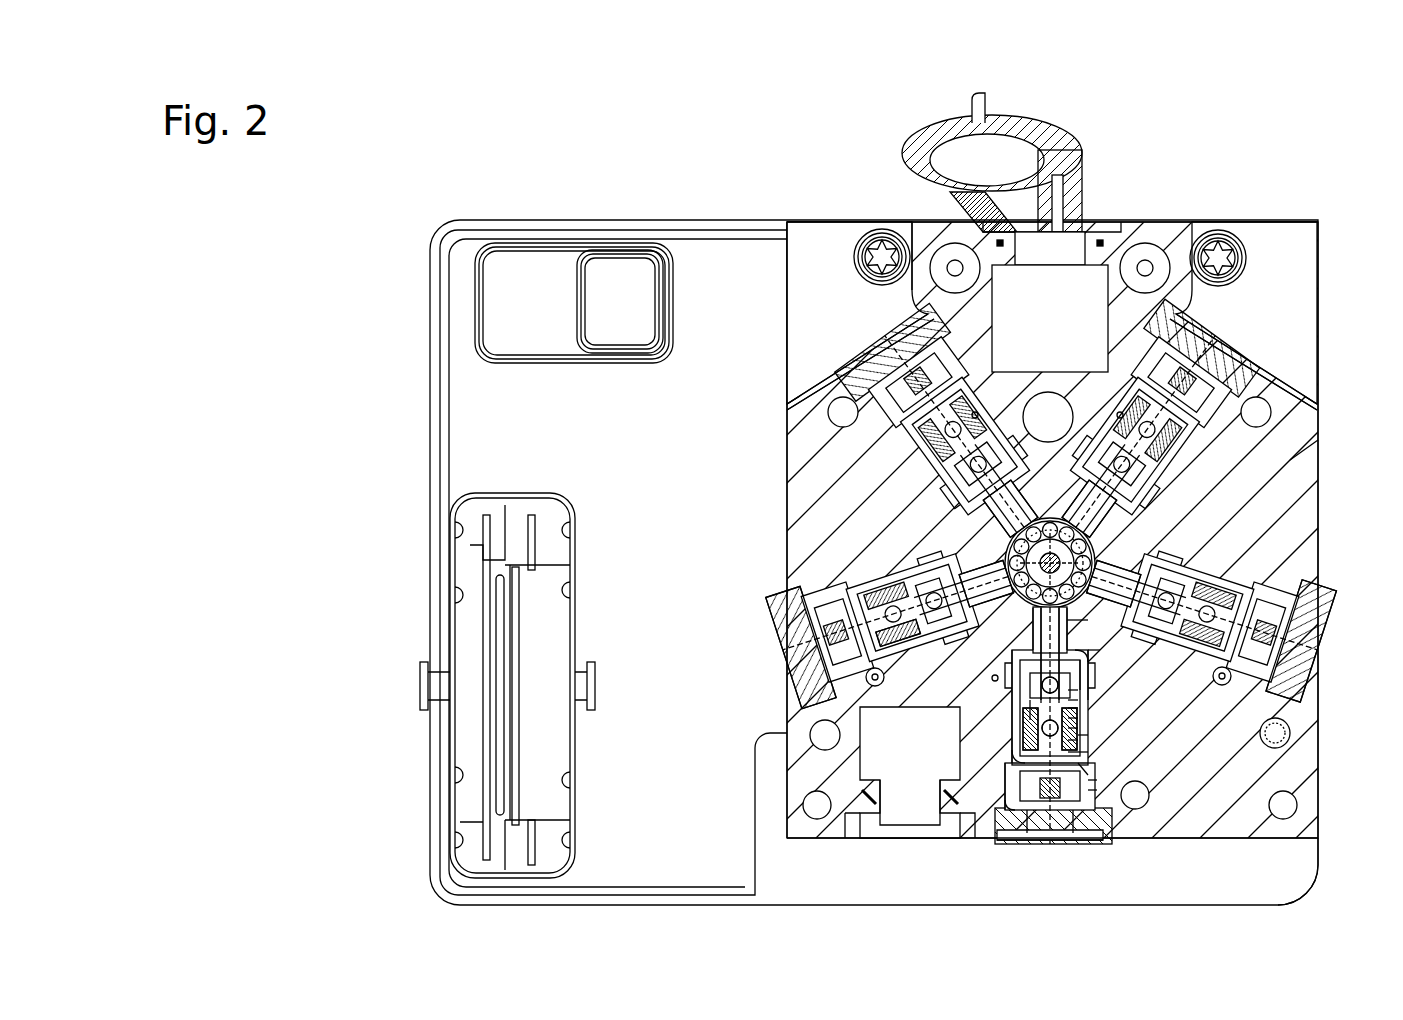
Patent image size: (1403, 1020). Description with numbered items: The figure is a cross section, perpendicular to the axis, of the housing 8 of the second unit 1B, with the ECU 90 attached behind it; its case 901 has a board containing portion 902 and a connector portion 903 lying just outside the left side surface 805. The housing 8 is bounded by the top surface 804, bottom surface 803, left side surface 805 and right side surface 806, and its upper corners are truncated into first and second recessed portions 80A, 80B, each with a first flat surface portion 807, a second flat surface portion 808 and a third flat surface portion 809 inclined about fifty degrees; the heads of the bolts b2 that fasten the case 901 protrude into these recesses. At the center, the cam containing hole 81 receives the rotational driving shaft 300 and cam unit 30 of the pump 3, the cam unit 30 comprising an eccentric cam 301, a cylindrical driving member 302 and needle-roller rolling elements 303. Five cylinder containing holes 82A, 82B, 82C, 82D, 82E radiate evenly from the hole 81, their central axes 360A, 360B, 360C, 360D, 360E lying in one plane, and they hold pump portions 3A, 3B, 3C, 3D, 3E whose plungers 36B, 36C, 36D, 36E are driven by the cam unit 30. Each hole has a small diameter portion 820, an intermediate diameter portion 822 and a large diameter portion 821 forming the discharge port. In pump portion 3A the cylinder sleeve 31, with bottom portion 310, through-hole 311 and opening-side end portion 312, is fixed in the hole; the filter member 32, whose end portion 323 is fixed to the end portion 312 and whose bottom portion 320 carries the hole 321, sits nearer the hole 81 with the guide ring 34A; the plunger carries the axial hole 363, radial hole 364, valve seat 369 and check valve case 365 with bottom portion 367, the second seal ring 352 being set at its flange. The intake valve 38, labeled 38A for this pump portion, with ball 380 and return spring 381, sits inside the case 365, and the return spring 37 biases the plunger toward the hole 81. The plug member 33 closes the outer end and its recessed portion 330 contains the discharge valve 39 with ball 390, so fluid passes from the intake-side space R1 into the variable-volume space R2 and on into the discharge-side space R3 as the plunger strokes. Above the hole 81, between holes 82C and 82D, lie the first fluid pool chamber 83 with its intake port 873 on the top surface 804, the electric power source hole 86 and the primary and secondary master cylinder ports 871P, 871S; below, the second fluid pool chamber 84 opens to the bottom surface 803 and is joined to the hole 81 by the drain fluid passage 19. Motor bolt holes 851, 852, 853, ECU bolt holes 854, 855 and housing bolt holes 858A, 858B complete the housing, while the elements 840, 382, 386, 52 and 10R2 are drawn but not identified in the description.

The ECU 90 is at (655, 220).
The connector portion 903 is at (580, 860).
The housing 8 is at (1300, 490).
The second unit 1B is at (1340, 222).
The first recessed portion 80A is at (840, 300).
The second recessed portion 80B is at (1265, 270).
The first flat surface portion 807 is at (805, 232).
The second flat surface portion 808 is at (873, 233).
The bolts b2 is at (882, 285).
The intake port 873 is at (953, 255).
The primary port 871P is at (1148, 258).
The secondary port 871S is at (905, 232).
The ring 10R2 is at (1000, 135).
The first fluid pool chamber 83 is at (1075, 230).
The top surface 804 is at (1110, 245).
The electric power source hole 86 is at (1050, 318).
The cam containing hole 81 is at (1045, 442).
The central axis of plunger 36C 360C is at (870, 340).
The central axis of plunger 36D 360D is at (1230, 340).
The third flat surface portion 809 is at (795, 398).
The bolt hole 852 is at (830, 415).
The bolt hole 853 is at (1270, 415).
The left side surface 805 is at (785, 495).
The pump 3 is at (1280, 575).
The cam unit 30 is at (1010, 545).
The rotational driving shaft 300 is at (1012, 555).
The driving member 302 is at (1090, 538).
The cam 301 is at (1092, 548).
The rolling elements 303 is at (1095, 558).
The pump portion 3A is at (1110, 810).
The pump portion 3B is at (828, 585).
The pump portion 3C is at (885, 440).
The pump portion 3D is at (1190, 445).
The pump portion 3E is at (1220, 565).
The plunger 36B is at (960, 560).
The plunger 36C is at (965, 490).
The plunger 36D is at (1140, 488).
The plunger 36E is at (1150, 560).
The central axis of plunger 36A 360A is at (1085, 845).
The central axis of plunger 36B 360B is at (780, 640).
The central axis of plunger 36E 360E is at (1315, 655).
The drain fluid passage 19 is at (975, 655).
The second fluid pool chamber 84 is at (905, 780).
The bracket 840 is at (950, 845).
The bolt hole 855 is at (825, 750).
The bolt hole 858A is at (817, 820).
The right side surface 806 is at (1290, 733).
The bolt hole 858B is at (1280, 745).
The bolt hole 851 is at (1145, 795).
The bolt hole 854 is at (1297, 805).
The control unit housing 901 is at (1320, 860).
The board containing portion 902 is at (1305, 895).
The bottom surface 803 is at (1230, 850).
The cylinder containing hole 82A is at (990, 680).
The cylinder containing hole 82B is at (895, 668).
The cylinder containing hole 82C is at (980, 410).
The cylinder containing hole 82D is at (1115, 410).
The cylinder containing hole 82E is at (1215, 676).
The small diameter portion 820 is at (1020, 617).
The return spring 381 is at (1020, 628).
The hole 321 is at (1022, 640).
The intake valve 38A is at (1025, 660).
The end portion of filter member 323 is at (1025, 688).
The intermediate diameter portion 822 is at (1025, 698).
The seal 382 is at (1025, 708).
The ring 386 is at (1022, 718).
The cylinder sleeve 31 is at (1022, 733).
The ball 52 is at (1022, 743).
The space R2 is at (1022, 758).
The large diameter portion 821 is at (1022, 770).
The plug member 33 is at (1022, 786).
The discharge-side space R3 is at (1028, 795).
The guide ring 34A is at (1072, 625).
The bottom portion of filter member 320 is at (1075, 637).
The filter member 32 is at (1078, 648).
The intake-side space R1 is at (1078, 660).
The end portion of cylinder sleeve 312 is at (1100, 650).
The radial hole 364 is at (1078, 680).
The axial hole 363 is at (1085, 688).
The second seal ring 352 is at (1085, 703).
The valve seat 369 is at (1085, 715).
The return spring 37 is at (1085, 726).
The ball 380 is at (1085, 740).
The intake valve 38 is at (1142, 745).
The check valve case 365 is at (1085, 762).
The bottom portion of check valve case 367 is at (1090, 766).
The ball 390 is at (1125, 775).
The discharge valve 39 is at (1166, 780).
The hole 311 is at (1040, 840).
The recessed portion 330 is at (1075, 838).
The bottom portion of cylinder sleeve 310 is at (1025, 845).